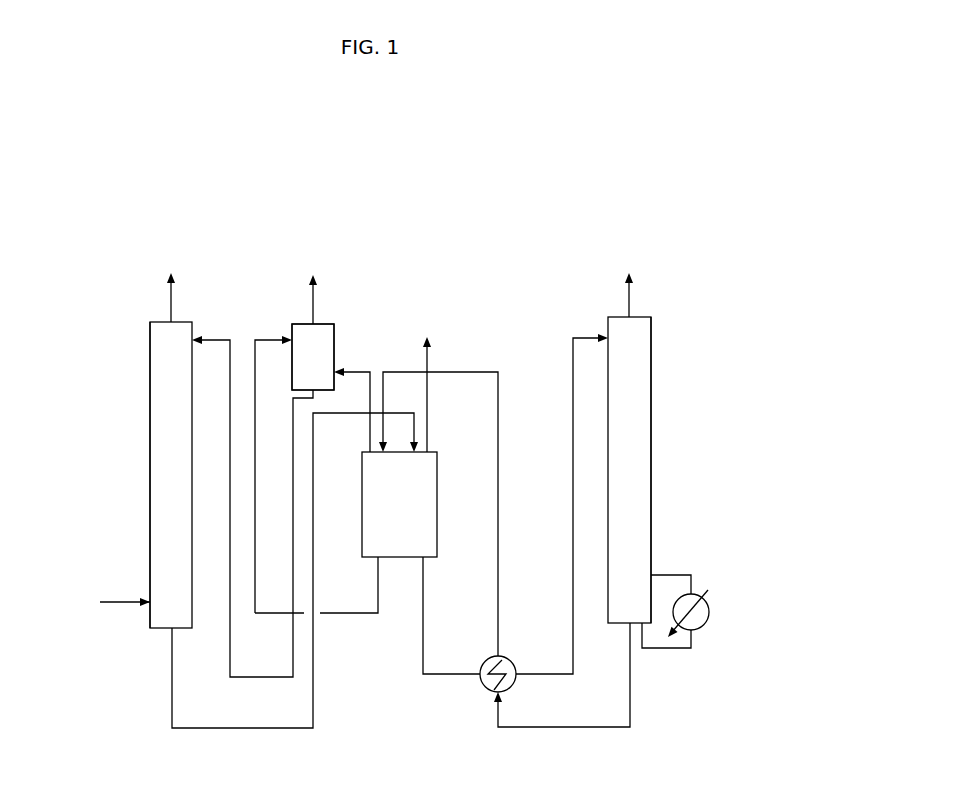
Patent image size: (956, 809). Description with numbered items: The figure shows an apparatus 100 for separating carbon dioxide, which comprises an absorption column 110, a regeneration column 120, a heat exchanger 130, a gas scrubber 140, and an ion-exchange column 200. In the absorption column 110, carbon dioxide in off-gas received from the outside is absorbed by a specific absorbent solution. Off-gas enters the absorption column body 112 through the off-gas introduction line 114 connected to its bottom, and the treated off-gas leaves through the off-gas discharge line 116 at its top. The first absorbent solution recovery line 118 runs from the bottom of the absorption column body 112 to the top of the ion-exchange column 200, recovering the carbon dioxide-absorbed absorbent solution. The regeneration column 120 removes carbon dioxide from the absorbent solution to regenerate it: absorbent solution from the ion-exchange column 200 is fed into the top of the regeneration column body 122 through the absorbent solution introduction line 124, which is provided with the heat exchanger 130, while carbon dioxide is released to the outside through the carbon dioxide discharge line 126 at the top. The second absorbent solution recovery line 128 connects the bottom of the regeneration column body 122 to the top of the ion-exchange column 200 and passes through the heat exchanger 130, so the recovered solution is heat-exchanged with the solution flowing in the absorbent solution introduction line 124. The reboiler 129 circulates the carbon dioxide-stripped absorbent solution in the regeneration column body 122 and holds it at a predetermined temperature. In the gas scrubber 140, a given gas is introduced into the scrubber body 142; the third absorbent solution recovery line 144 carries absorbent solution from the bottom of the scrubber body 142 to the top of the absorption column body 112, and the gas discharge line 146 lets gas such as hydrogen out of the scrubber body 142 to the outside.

The apparatus for separating carbon dioxide 100 is at (94, 191).
The absorption column 110 is at (140, 378).
The absorption column body 112 is at (158, 447).
The off-gas introduction line 114 is at (120, 600).
The off-gas discharge line 116 is at (168, 297).
The first absorbent solution recovery line 118 is at (243, 728).
The regeneration column 120 is at (664, 372).
The regeneration column body 122 is at (651, 441).
The absorbent solution introduction line 124 is at (572, 352).
The carbon dioxide discharge line 126 is at (629, 297).
The second absorbent solution recovery line 128 is at (563, 727).
The reboiler 129 is at (672, 573).
The heat exchanger 130 is at (482, 691).
The gas scrubber 140 is at (358, 328).
The scrubber body 142 is at (330, 347).
The third absorbent solution recovery line 144 is at (222, 338).
The gas discharge line 146 is at (316, 297).
The ion-exchange column 200 is at (416, 514).